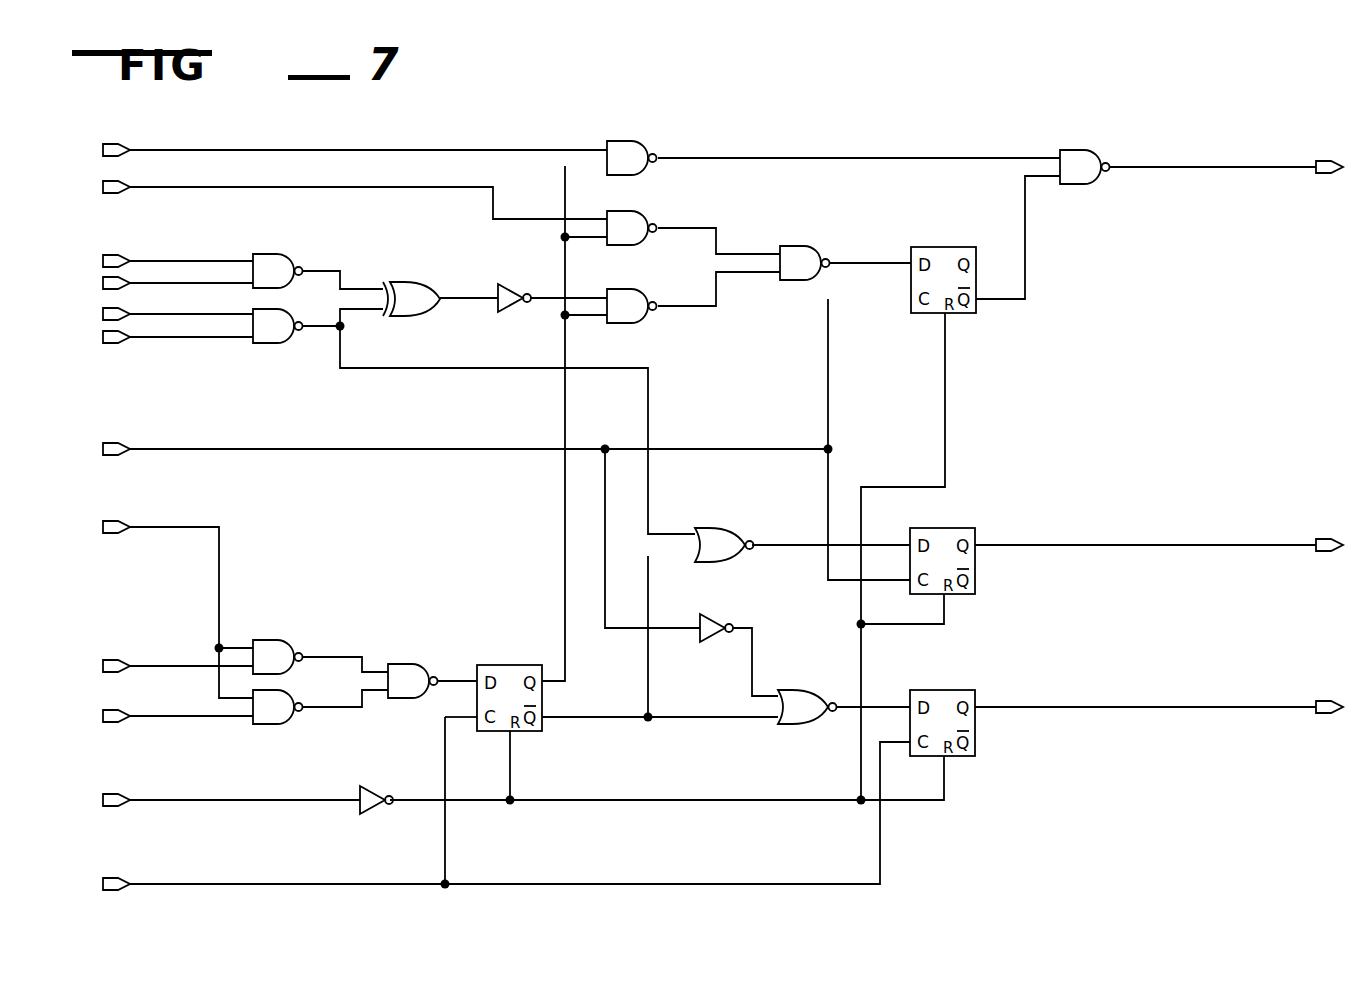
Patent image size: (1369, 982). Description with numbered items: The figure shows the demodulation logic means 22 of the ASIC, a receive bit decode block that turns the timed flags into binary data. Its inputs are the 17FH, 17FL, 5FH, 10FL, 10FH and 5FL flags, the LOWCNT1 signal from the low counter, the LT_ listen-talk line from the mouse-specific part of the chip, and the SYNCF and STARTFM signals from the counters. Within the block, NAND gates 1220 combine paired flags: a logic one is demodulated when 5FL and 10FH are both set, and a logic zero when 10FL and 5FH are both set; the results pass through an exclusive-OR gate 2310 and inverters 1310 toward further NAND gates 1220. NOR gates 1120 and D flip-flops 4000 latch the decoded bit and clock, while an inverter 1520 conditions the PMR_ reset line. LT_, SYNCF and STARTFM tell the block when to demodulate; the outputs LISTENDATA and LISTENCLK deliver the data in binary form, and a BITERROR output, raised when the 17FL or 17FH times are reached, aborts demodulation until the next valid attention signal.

The demodulation logic means 22 is at (1067, 117).
The NAND gate 1220 is at (682, 443).
The exclusive-OR gate 2310 is at (418, 310).
The inverter 1310 is at (615, 475).
The inverter 1520 is at (385, 809).
The NOR gate 1120 is at (766, 638).
The D flip-flop 4000 is at (740, 515).